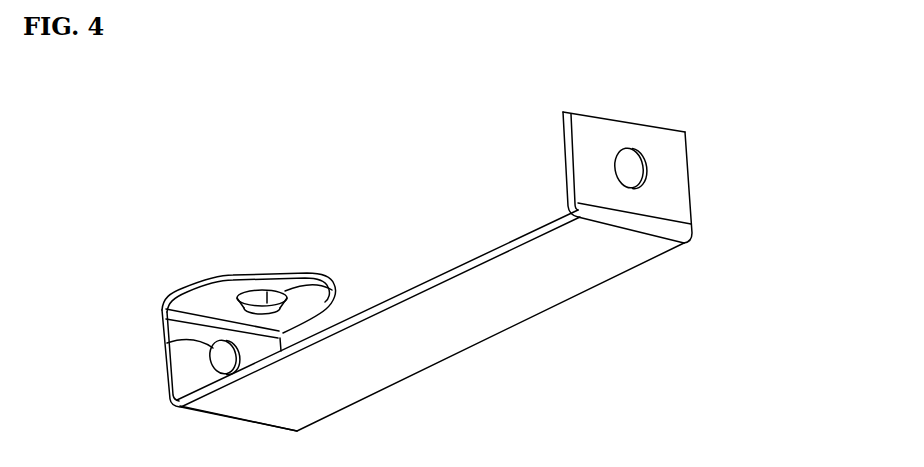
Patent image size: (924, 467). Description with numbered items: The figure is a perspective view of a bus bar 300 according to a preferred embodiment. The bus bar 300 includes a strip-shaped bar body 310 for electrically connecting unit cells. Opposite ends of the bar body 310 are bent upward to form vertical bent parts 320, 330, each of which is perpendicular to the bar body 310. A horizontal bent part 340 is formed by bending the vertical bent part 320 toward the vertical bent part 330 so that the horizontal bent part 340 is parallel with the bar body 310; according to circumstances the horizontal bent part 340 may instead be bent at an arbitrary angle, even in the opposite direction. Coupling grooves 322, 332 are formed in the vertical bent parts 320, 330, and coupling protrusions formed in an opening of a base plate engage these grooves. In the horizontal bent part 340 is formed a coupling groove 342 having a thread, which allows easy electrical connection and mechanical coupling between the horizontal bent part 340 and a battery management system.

The bus bar 300 is at (153, 147).
The bar body 310 is at (457, 328).
The vertical bent part 320 is at (173, 380).
The coupling groove 322 is at (165, 353).
The vertical bent part 330 is at (675, 195).
The coupling groove 332 is at (636, 150).
The horizontal bent part 340 is at (247, 272).
The coupling groove 342 is at (292, 298).